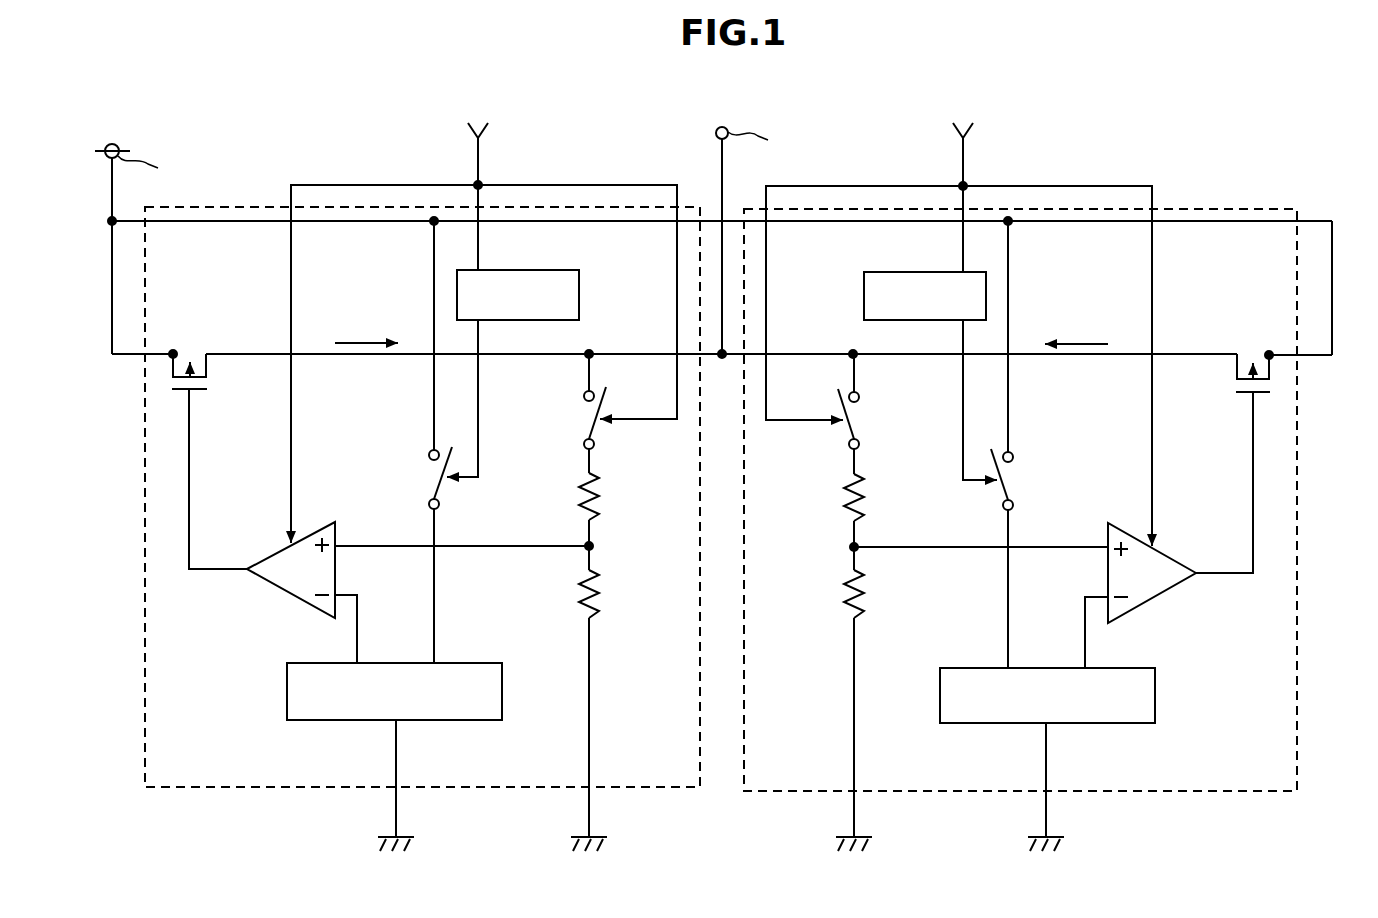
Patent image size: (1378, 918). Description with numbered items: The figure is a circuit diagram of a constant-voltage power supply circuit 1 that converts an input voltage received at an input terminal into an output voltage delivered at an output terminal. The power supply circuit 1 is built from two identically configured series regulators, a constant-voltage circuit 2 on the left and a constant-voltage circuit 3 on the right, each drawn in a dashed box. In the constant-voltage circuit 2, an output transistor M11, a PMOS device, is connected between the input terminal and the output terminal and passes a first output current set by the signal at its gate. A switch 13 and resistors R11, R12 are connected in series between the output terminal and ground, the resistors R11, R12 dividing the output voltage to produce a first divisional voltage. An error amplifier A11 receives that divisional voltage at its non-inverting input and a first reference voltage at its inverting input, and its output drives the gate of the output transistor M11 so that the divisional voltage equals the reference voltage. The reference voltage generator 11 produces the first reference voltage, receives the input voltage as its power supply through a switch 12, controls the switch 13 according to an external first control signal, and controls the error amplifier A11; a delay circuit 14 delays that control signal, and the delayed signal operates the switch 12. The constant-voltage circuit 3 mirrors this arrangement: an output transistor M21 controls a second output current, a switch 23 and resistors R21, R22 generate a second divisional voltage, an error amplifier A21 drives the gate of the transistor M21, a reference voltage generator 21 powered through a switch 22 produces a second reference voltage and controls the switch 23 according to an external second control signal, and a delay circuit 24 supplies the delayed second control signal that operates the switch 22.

The constant-voltage power supply circuit 1 is at (888, 68).
The constant-voltage circuit 2 is at (252, 206).
The constant-voltage circuit 3 is at (1184, 208).
The reference voltage generator 11 is at (284, 692).
The switch 12 is at (426, 468).
The switch 13 is at (580, 418).
The delay circuit 14 is at (579, 293).
The reference voltage generator 21 is at (1155, 692).
The switch 22 is at (1014, 470).
The switch 23 is at (860, 416).
The delay circuit 24 is at (862, 292).
The output transistor M11 is at (196, 350).
The output transistor M21 is at (1246, 350).
The error amplifier A11 is at (266, 552).
The error amplifier A21 is at (1174, 556).
The resistor R11 is at (614, 496).
The resistor R12 is at (614, 594).
The resistor R21 is at (827, 497).
The resistor R22 is at (827, 594).